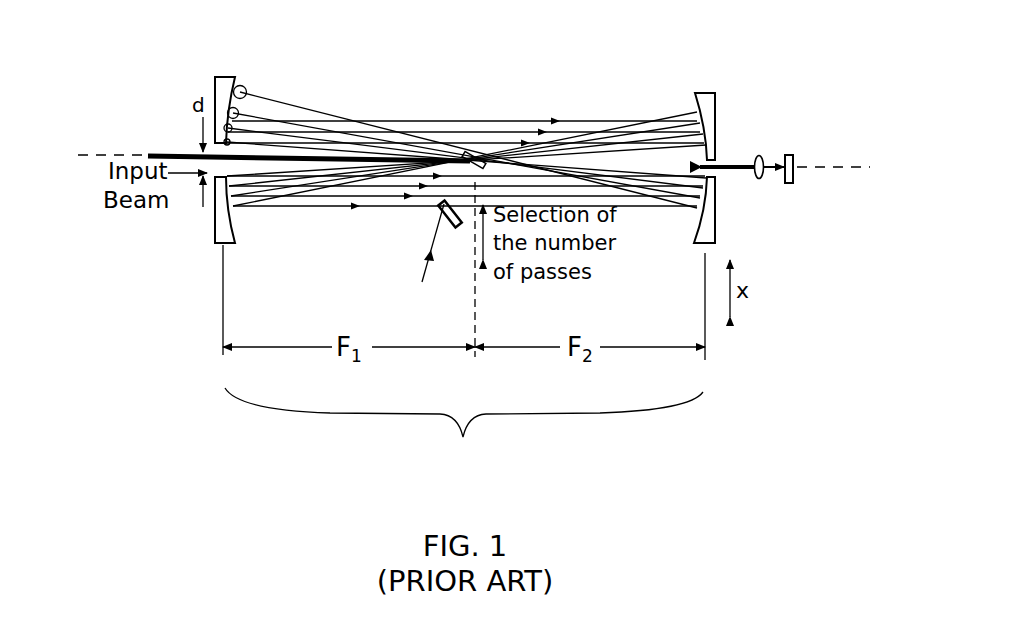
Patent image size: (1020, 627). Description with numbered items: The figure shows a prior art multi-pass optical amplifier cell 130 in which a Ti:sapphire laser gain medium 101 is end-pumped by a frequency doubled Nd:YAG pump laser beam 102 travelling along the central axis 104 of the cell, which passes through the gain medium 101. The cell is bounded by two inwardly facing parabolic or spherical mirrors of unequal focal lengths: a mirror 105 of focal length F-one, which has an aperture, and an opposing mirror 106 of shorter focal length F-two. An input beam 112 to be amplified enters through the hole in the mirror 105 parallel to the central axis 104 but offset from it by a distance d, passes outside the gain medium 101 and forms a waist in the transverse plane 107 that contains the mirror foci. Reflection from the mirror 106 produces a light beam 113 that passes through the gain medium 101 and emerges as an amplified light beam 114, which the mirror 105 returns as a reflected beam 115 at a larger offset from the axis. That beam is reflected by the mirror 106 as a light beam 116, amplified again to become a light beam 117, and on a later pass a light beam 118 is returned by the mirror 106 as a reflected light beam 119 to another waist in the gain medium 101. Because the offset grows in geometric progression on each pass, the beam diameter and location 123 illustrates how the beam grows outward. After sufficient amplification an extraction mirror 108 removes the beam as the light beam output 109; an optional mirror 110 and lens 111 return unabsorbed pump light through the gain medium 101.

The laser gain medium 101 is at (478, 150).
The pump laser beam 102 is at (147, 150).
The central axis 104 is at (93, 157).
The mirror 105 is at (227, 246).
The mirror 106 is at (695, 245).
The transverse plane 107 is at (473, 283).
The mirror 108 is at (453, 230).
The light beam output 109 is at (422, 266).
The mirror 110 is at (791, 184).
The lens 111 is at (757, 180).
The input beam 112 is at (186, 178).
The light beam 113 is at (601, 120).
The amplified light beam 114 is at (343, 142).
The reflected beam 115 is at (425, 142).
The light beam 116 is at (628, 142).
The light beam 117 is at (263, 206).
The light beam 118 is at (390, 186).
The reflected light beam 119 is at (662, 197).
The beam diameter and location 123 is at (833, 167).
The optical amplifier cell 130 is at (464, 426).